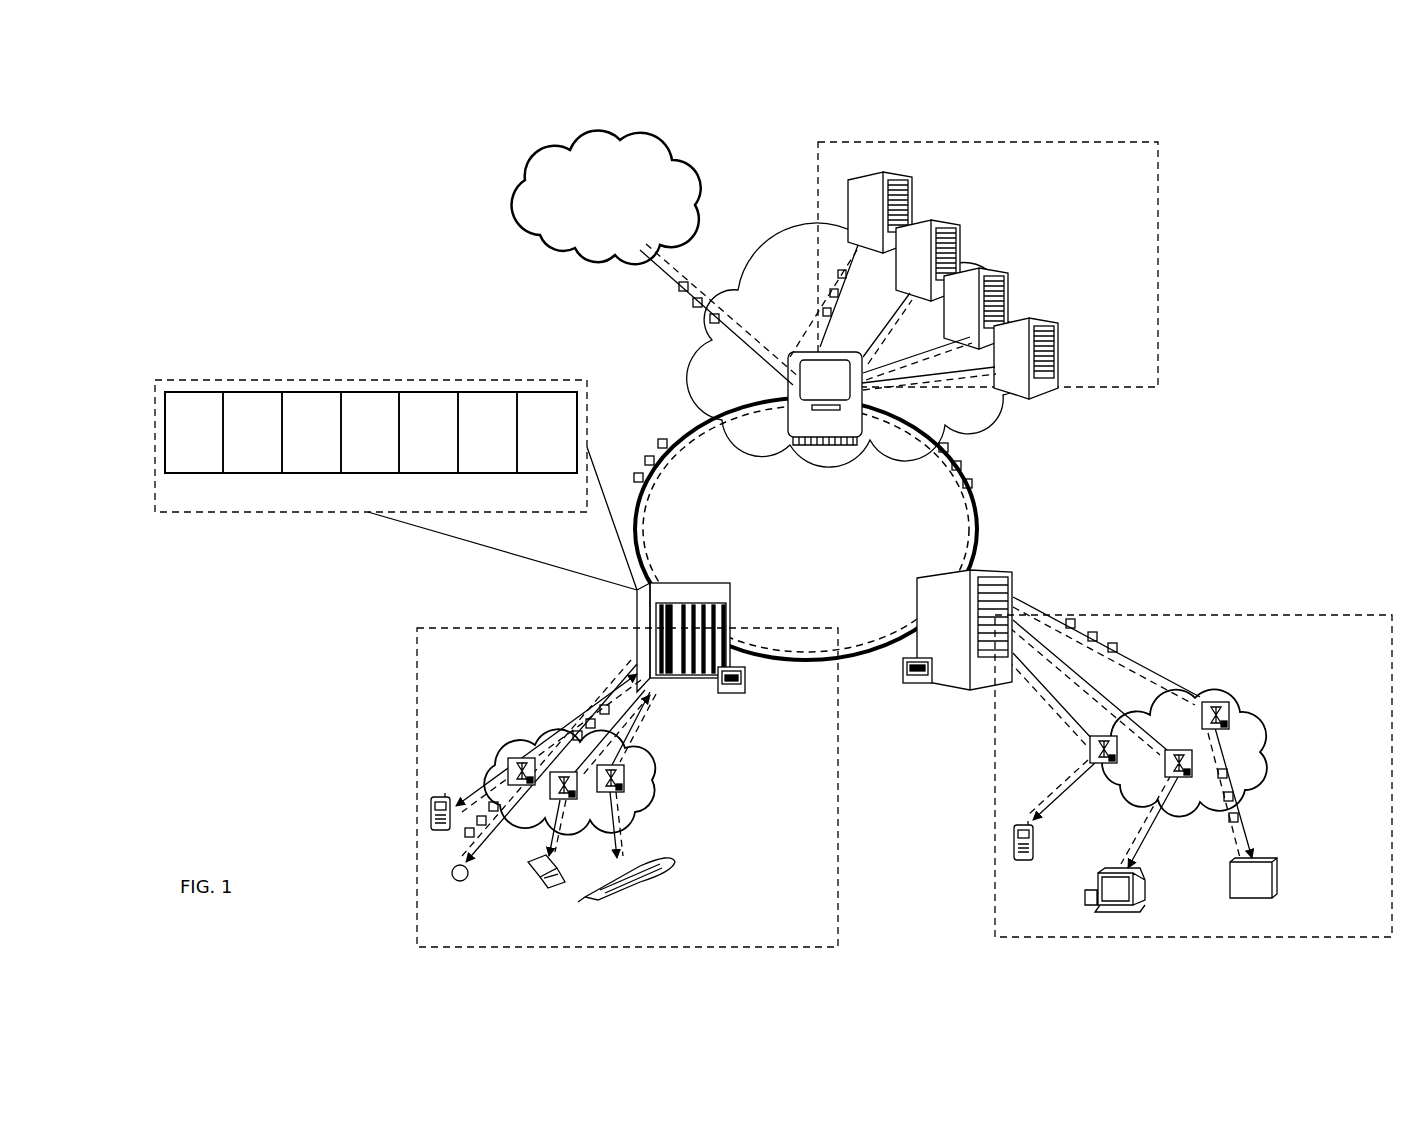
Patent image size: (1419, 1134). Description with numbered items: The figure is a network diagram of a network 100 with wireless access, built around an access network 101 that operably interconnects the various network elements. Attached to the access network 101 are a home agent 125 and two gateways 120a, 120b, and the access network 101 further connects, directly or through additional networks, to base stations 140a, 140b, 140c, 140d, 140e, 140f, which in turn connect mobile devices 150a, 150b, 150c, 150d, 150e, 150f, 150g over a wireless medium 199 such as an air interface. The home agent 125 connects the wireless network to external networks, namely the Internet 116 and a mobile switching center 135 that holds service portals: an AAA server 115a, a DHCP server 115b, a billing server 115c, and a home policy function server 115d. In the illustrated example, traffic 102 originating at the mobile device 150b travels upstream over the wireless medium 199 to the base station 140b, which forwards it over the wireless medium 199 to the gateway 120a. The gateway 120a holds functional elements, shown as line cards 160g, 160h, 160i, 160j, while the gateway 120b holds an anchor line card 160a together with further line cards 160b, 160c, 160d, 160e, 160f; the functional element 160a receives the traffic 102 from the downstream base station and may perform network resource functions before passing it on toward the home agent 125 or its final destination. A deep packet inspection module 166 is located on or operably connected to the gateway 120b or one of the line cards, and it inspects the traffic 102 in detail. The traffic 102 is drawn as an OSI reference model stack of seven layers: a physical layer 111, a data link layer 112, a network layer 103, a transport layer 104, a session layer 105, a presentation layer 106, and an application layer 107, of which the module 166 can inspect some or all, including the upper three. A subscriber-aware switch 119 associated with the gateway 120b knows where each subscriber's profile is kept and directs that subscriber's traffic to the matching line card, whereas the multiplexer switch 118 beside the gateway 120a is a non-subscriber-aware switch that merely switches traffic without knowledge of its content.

The network 100 is at (356, 213).
The access network 101 is at (640, 520).
The traffic 102 is at (1250, 805).
The network layer (L3) 103 is at (312, 392).
The transport layer (L4) 104 is at (371, 392).
The session layer (L5) 105 is at (430, 392).
The presentation layer (L6) 106 is at (488, 392).
The application layer (L7) 107 is at (546, 392).
The physical layer (L1) 111 is at (194, 392).
The data link layer (L2) 112 is at (253, 392).
The authentication, authorization, and accounting (AAA) server 115a is at (896, 176).
The dynamic host configuration protocol (DHCP) server 115b is at (1060, 243).
The billing server 115c is at (1063, 290).
The home policy function (PF) server 115d is at (1060, 350).
The Internet 116 is at (592, 219).
The multiplexer switch 118 is at (918, 688).
The subscriber-aware switch 119 is at (746, 682).
The gateway 120a is at (943, 567).
The gateway 120b is at (710, 678).
The home agent 125 is at (810, 392).
The mobile switching center 135 is at (1112, 378).
The base station 140a is at (1229, 708).
The base station 140b is at (1165, 768).
The base station 140c is at (1088, 748).
The base station 140d is at (655, 777).
The base station 140e is at (548, 804).
The base station 140f is at (520, 757).
The mobile device 150a is at (1278, 882).
The mobile device 150b is at (1148, 888).
The mobile device 150c is at (1040, 852).
The mobile device 150d is at (630, 885).
The mobile device 150e is at (548, 890).
The mobile device 150f is at (462, 883).
The mobile device 150g is at (430, 812).
The functional element 160a is at (667, 640).
The functional element 160b is at (684, 603).
The functional element 160c is at (748, 556).
The functional element 160d is at (692, 678).
The functional element 160e is at (748, 556).
The functional element 160f is at (748, 556).
The line card 160g is at (986, 620).
The line card 160h is at (1026, 586).
The line card 160i is at (1026, 586).
The line card 160j is at (980, 584).
The deep packet inspection (DPI) module 166 is at (668, 658).
The wireless medium 199 is at (663, 272).